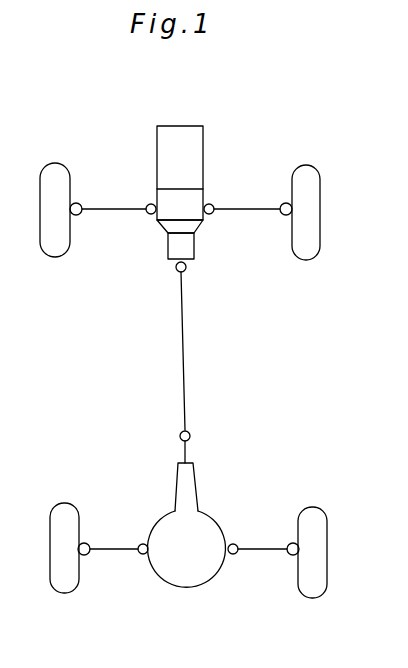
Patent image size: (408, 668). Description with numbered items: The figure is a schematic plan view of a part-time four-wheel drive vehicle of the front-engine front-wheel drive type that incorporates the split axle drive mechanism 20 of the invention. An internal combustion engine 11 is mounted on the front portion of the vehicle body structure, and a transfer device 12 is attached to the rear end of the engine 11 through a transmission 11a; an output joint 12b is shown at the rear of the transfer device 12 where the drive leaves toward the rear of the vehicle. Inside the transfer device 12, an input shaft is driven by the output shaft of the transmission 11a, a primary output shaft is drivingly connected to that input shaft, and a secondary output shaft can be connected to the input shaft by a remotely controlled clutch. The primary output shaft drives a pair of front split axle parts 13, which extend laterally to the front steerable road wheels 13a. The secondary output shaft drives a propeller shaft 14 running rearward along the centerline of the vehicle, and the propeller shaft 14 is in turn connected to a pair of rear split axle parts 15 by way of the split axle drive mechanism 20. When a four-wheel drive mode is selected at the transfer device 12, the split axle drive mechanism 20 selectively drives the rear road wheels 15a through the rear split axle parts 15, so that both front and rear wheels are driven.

The internal combustion engine 11 is at (197, 153).
The transmission 11a is at (195, 225).
The transfer device 12 is at (164, 250).
The output joint 12b is at (191, 247).
The front split axle parts 13 is at (107, 213).
The front steerable road wheels 13a is at (66, 170).
The propeller shaft 14 is at (182, 378).
The rear split axle parts 15 is at (108, 555).
The rear road wheels 15a is at (78, 503).
The split axle drive mechanism 20 is at (218, 518).